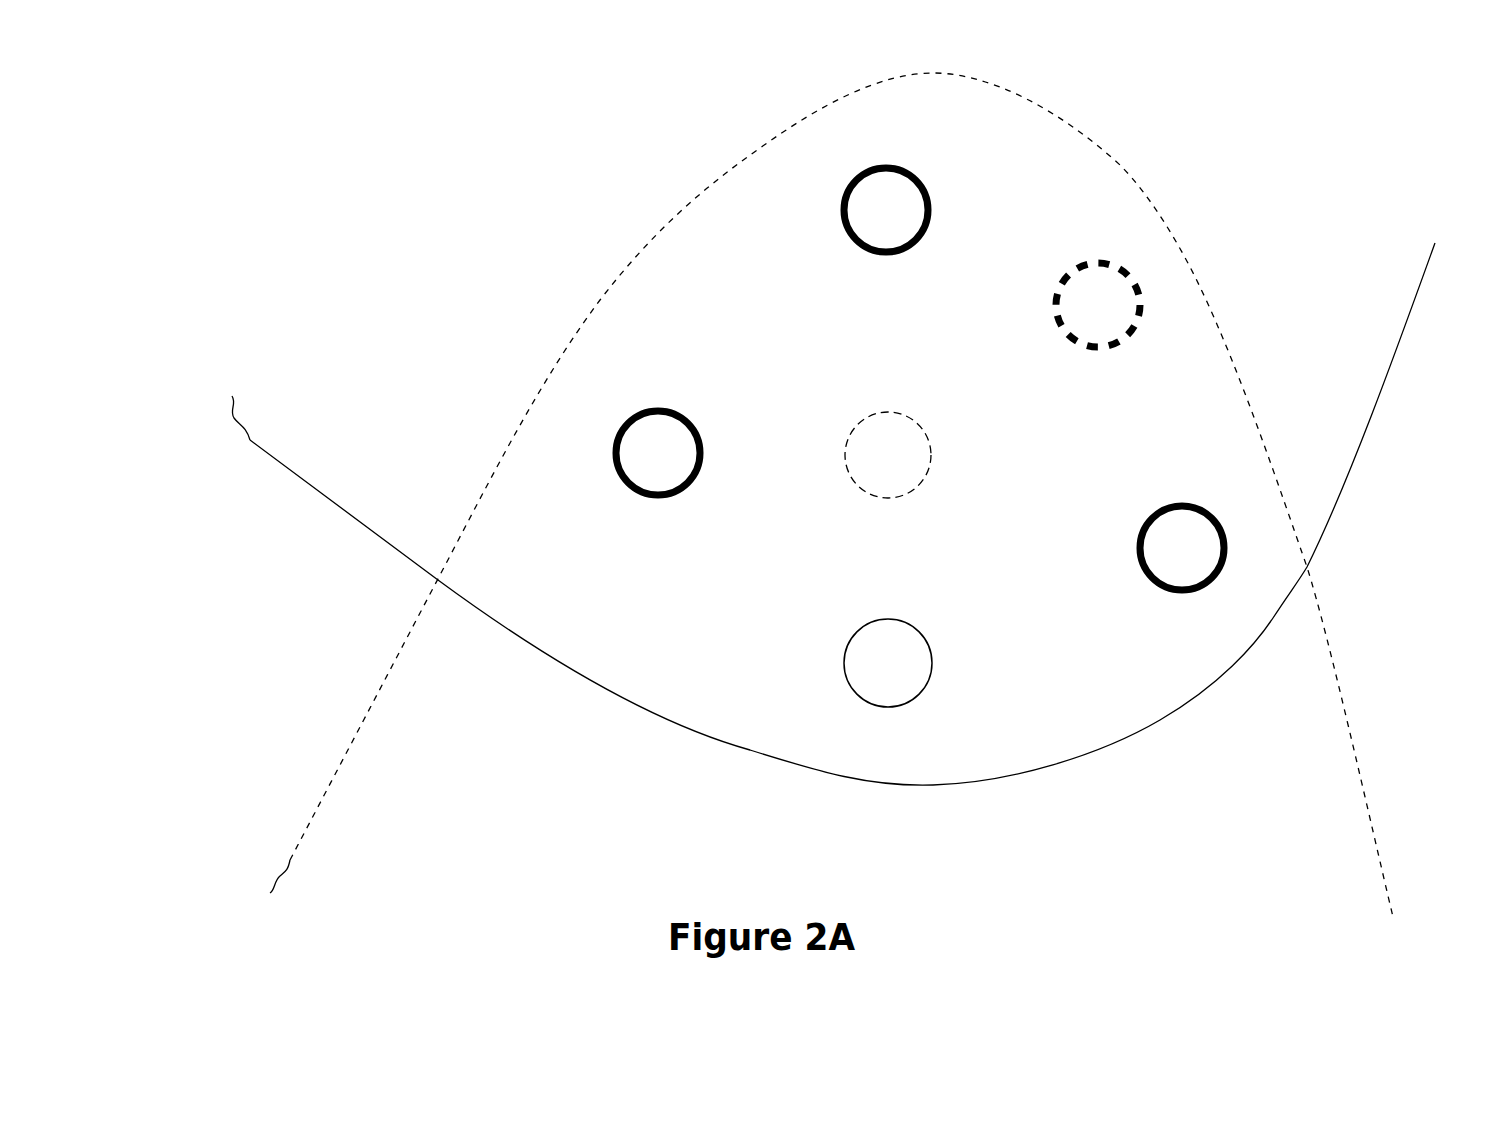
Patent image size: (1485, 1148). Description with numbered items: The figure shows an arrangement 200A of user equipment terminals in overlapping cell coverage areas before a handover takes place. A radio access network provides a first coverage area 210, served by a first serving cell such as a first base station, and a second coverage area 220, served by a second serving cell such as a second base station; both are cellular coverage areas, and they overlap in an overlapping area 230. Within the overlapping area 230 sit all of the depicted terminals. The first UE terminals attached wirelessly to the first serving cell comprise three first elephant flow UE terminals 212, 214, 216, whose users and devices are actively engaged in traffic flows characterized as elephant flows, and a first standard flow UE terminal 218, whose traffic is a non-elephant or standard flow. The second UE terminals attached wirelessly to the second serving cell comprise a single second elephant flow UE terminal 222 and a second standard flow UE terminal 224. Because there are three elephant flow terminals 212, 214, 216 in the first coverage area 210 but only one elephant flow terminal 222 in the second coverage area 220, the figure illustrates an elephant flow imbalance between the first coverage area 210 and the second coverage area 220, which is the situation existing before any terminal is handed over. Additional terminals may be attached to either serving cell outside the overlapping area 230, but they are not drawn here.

The UE terminals in overlapping cell coverage areas before handover 200A is at (213, 66).
The first coverage area 210 is at (438, 399).
The first elephant flow UE terminal 212 is at (660, 408).
The first elephant flow UE terminal 214 is at (887, 166).
The first elephant flow UE terminal 216 is at (1185, 502).
The first standard flow UE terminal 218 is at (888, 618).
The second coverage area 220 is at (484, 913).
The second elephant flow UE terminal 222 is at (1098, 262).
The second standard flow UE terminal 224 is at (887, 410).
The overlapping area 230 is at (708, 589).